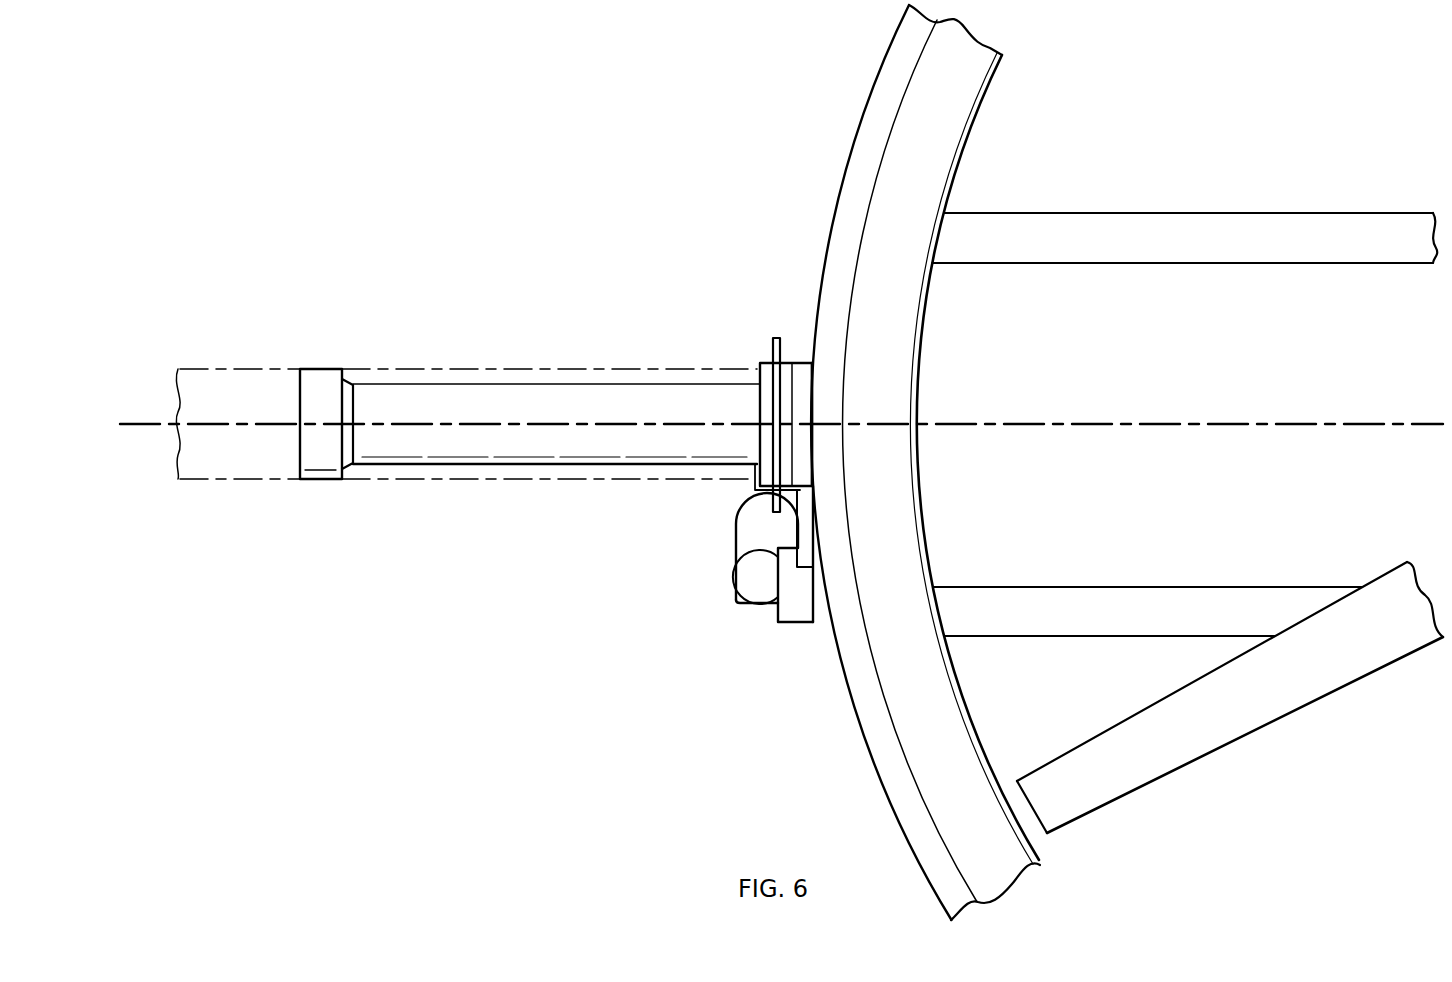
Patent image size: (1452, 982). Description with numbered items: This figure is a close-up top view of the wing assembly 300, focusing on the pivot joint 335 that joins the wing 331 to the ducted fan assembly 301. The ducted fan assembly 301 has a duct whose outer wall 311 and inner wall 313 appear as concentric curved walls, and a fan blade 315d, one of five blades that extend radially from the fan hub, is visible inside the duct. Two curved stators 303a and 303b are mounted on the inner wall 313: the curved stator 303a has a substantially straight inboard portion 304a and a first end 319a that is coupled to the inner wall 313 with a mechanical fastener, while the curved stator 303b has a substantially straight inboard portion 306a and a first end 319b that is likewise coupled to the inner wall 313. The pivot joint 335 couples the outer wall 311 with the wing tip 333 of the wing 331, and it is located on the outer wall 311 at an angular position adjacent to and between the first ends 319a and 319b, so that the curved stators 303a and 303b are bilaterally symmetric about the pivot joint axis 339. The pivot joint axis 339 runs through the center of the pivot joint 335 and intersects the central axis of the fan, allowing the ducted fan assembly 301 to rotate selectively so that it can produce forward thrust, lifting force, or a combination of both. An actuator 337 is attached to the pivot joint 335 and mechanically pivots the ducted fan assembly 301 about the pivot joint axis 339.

The wing assembly 300 is at (578, 148).
The ducted fan assembly 301 is at (825, 204).
The outer wall 311 is at (853, 145).
The inner wall 313 is at (972, 130).
The curved stator 303a is at (1212, 213).
The curved stator 303b is at (1200, 587).
The inboard portion 304a is at (1106, 213).
The inboard portion 306a is at (1085, 587).
The first end 319a is at (948, 263).
The first end 319b is at (947, 586).
The fan blade 315d is at (1208, 755).
The pivot joint axis 339 is at (1203, 424).
The wing 331 is at (497, 466).
The wing tip 333 is at (760, 400).
The pivot joint 335 is at (802, 457).
The actuator 337 is at (735, 547).